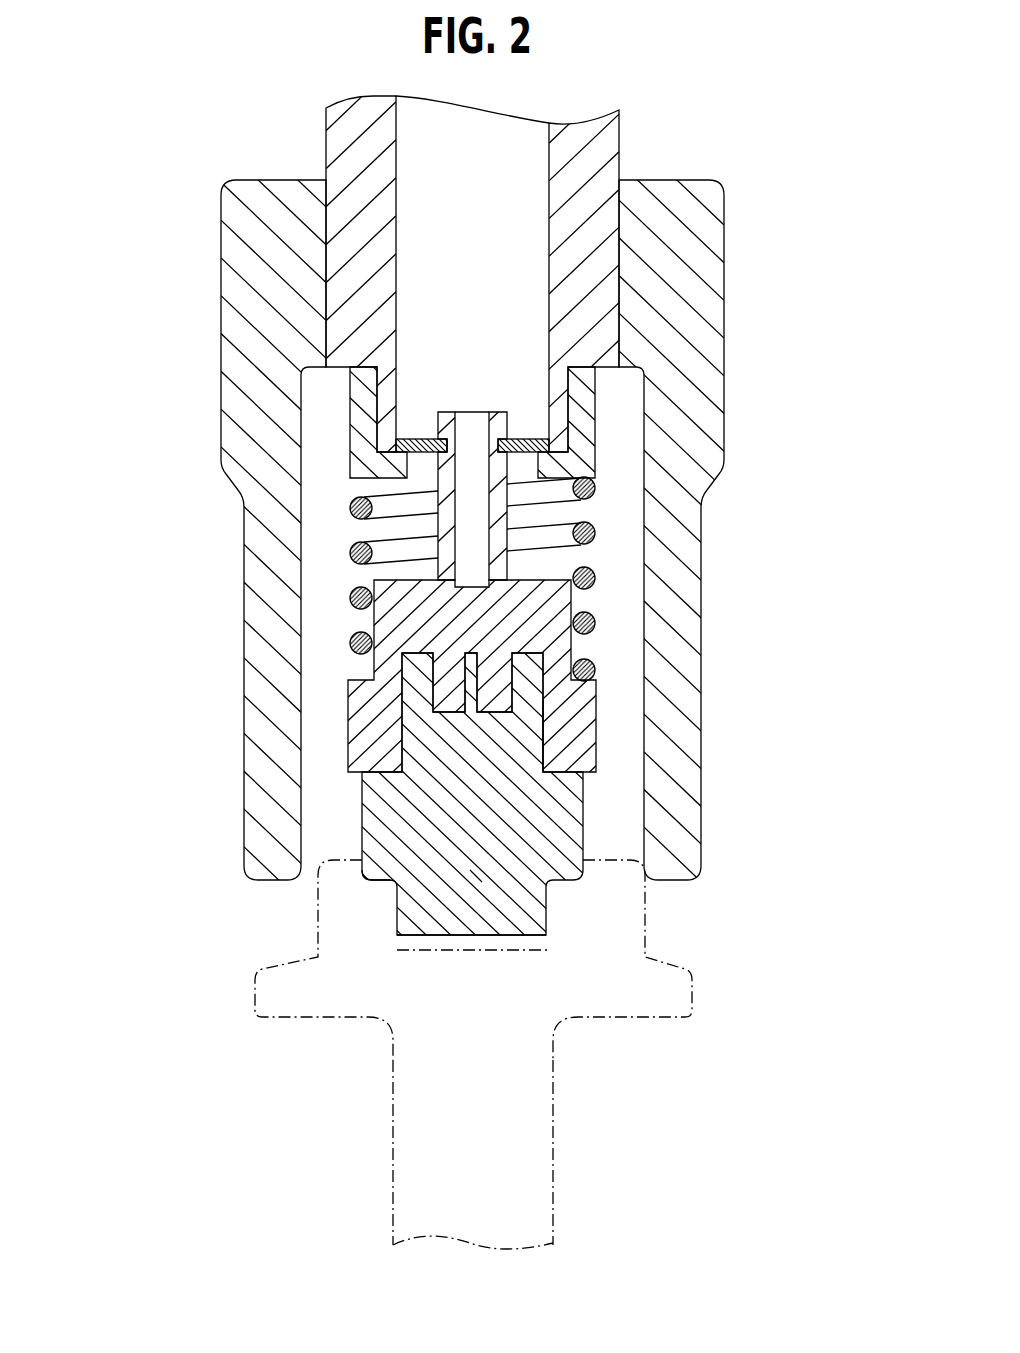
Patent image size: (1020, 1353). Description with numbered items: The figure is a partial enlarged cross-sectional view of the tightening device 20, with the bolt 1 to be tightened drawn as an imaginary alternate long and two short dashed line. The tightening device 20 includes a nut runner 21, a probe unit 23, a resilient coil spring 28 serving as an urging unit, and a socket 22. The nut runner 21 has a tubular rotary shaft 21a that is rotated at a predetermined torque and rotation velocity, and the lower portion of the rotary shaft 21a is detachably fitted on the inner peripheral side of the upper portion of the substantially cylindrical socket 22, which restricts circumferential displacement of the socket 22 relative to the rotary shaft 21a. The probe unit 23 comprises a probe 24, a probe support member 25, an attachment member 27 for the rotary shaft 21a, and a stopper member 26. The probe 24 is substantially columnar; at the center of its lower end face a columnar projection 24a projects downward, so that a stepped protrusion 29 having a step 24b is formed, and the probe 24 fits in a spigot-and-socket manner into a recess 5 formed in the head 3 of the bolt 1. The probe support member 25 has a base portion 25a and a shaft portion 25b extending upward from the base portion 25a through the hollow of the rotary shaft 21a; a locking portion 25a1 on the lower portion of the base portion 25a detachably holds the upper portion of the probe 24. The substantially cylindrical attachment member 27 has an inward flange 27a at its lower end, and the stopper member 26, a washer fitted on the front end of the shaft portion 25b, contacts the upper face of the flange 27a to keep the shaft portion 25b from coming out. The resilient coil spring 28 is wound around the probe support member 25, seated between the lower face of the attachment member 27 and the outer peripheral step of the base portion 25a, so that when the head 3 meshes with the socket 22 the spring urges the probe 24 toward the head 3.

The bolt 1 is at (555, 1100).
The head 3 is at (646, 929).
The recess 5 is at (433, 940).
The tightening device 20 is at (435, 567).
The nut runner 21 is at (496, 268).
The rotary shaft 21a is at (580, 156).
The socket 22 is at (690, 632).
The probe unit 23 is at (422, 711).
The probe 24 is at (444, 791).
The projection 24a is at (447, 943).
The step 24b is at (384, 887).
The probe support member 25 is at (458, 684).
The base portion 25a is at (491, 684).
The locking portion 25a1 is at (540, 748).
The shaft portion 25b is at (437, 515).
The stopper member 26 is at (400, 428).
The attachment member 27 is at (333, 478).
The flange 27a is at (392, 466).
The resilient coil spring 28 is at (562, 527).
The stepped protrusion 29 is at (475, 868).